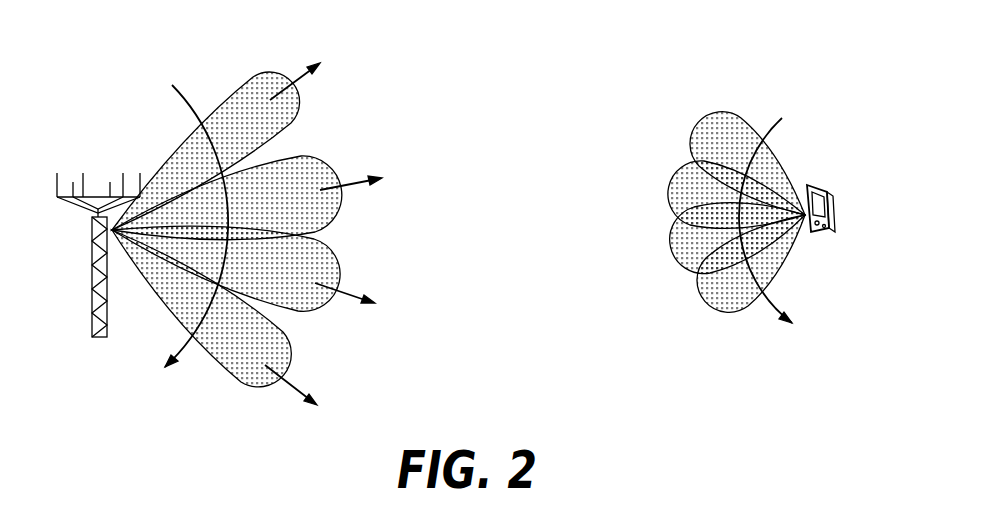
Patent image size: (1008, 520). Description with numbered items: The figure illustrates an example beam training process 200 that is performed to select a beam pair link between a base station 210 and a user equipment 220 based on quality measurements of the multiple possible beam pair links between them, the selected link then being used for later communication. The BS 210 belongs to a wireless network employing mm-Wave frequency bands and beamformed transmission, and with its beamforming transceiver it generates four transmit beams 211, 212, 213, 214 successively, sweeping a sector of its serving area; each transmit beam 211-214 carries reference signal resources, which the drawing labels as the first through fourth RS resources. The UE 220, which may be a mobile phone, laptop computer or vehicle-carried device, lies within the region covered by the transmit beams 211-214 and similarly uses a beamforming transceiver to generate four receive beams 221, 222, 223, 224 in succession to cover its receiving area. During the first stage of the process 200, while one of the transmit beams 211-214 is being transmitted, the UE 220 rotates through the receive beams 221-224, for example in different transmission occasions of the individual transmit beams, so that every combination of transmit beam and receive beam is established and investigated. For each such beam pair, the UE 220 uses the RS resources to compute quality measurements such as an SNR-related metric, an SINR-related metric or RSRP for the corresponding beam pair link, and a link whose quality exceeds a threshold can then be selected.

The beam training process 200 is at (662, 45).
The base station 210 is at (92, 273).
The first transmit beam 211 is at (235, 78).
The second transmit beam 212 is at (310, 155).
The third transmit beam 213 is at (330, 247).
The fourth transmit beam 214 is at (240, 388).
The user equipment 220 is at (822, 186).
The first receive beam 221 is at (702, 117).
The second receive beam 222 is at (678, 163).
The third receive beam 223 is at (668, 225).
The fourth receive beam 224 is at (700, 290).